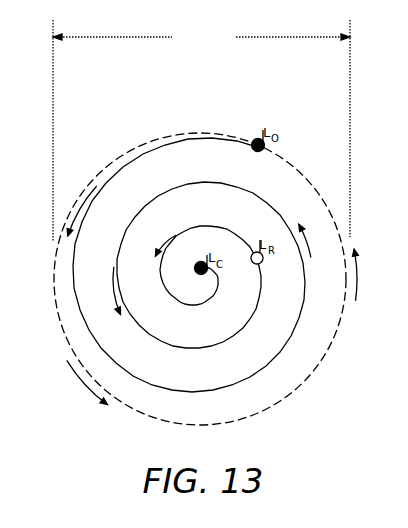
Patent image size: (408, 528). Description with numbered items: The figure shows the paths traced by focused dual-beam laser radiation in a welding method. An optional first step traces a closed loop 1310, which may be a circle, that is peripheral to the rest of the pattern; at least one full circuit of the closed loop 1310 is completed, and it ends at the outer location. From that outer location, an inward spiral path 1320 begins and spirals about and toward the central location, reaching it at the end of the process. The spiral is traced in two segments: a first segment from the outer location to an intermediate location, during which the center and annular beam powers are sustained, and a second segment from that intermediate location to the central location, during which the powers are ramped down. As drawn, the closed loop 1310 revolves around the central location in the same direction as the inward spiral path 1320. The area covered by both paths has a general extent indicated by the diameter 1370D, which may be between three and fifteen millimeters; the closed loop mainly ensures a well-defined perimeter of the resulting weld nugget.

The closed loop 1310 is at (165, 138).
The inward spiral path 1320 is at (117, 162).
The diameter 1370D is at (201, 131).